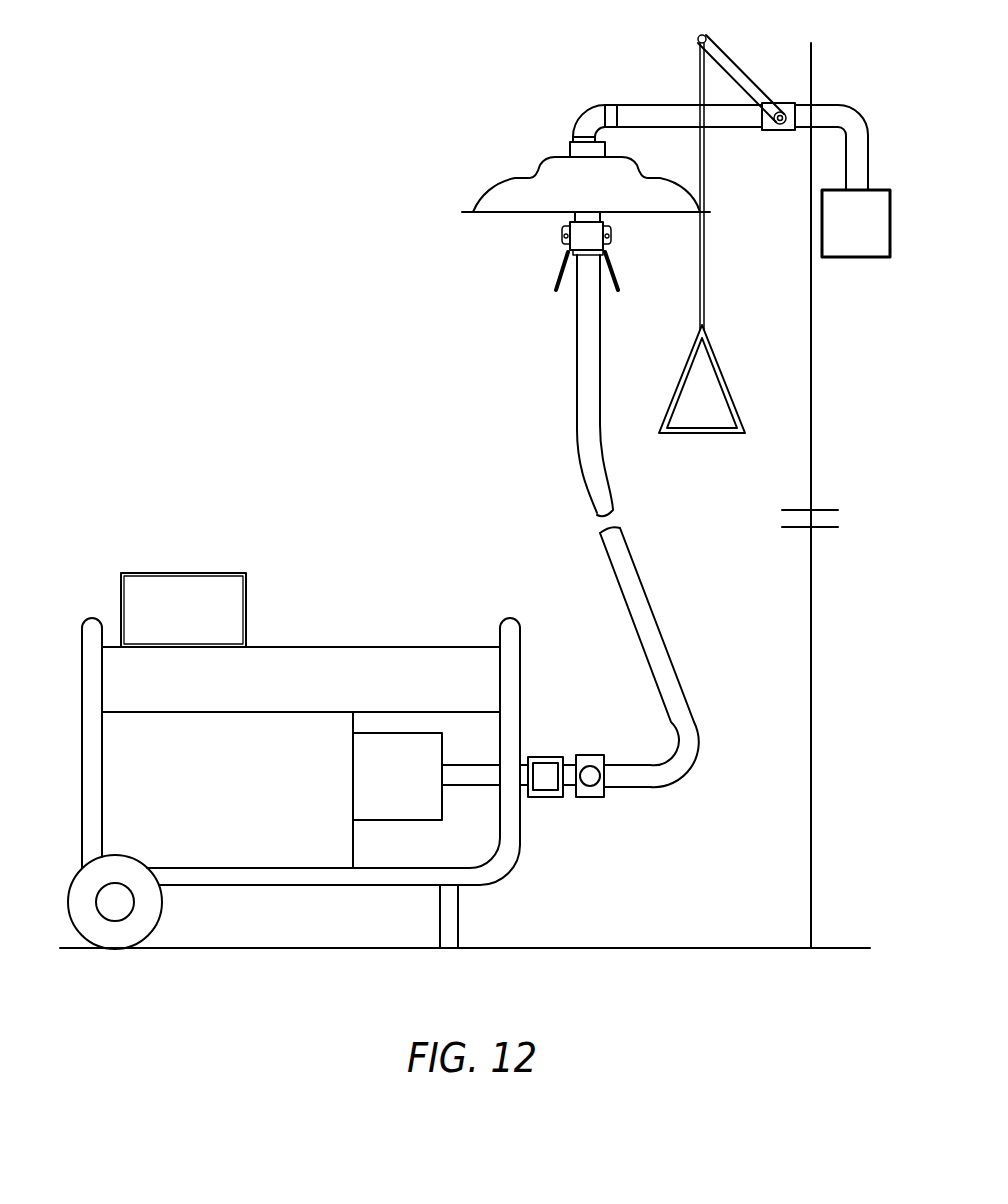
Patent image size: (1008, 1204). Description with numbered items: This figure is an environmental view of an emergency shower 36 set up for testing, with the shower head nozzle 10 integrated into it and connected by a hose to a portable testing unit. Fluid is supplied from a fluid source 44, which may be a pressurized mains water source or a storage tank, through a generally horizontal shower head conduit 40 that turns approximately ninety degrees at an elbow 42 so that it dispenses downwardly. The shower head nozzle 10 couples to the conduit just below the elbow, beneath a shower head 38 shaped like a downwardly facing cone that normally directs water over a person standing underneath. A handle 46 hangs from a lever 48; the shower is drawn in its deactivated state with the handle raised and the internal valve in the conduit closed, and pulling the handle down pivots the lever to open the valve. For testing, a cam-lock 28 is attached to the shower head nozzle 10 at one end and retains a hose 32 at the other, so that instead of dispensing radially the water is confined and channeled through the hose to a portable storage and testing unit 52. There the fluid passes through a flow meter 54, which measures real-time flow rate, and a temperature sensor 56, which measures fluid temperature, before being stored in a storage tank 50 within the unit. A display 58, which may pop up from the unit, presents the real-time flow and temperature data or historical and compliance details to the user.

The shower head nozzle 10 is at (570, 217).
The cam-lock 28 is at (583, 237).
The hose 32 is at (570, 343).
The emergency shower 36 is at (559, 111).
The shower head 38 is at (505, 190).
The shower head conduit 40 is at (657, 105).
The elbow 42 is at (590, 105).
The fluid source 44 is at (857, 260).
The handle 46 is at (702, 434).
The lever 48 is at (745, 72).
The storage tank 50 is at (225, 835).
The portable storage and testing unit 52 is at (349, 755).
The flow meter 54 is at (590, 800).
The temperature sensor 56 is at (545, 800).
The display 58 is at (183, 593).